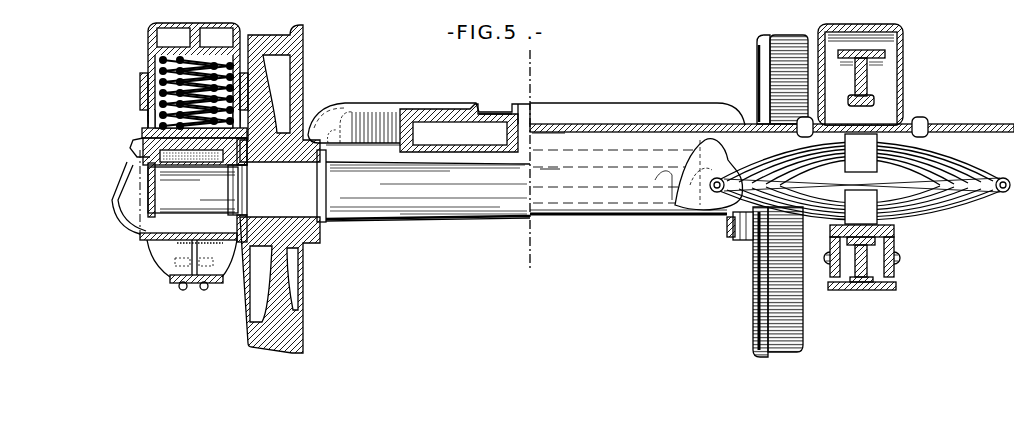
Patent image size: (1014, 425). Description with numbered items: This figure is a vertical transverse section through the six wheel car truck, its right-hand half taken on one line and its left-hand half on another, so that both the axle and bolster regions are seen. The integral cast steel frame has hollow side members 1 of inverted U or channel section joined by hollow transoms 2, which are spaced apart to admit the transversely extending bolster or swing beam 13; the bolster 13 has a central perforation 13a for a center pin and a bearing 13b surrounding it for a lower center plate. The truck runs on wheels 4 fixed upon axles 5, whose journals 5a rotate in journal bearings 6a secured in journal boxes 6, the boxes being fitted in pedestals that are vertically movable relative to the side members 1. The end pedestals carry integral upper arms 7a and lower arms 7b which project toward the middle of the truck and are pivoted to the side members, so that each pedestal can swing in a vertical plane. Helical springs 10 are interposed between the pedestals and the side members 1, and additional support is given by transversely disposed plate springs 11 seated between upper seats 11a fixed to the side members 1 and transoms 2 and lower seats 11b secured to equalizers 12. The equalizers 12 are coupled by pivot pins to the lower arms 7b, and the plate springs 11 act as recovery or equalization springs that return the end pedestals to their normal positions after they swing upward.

The side member 1 is at (210, 23).
The transom 2 is at (596, 140).
The wheel 4 is at (287, 297).
The axle 5 is at (459, 208).
The journal 5a is at (197, 190).
The journal box 6 is at (140, 236).
The journal bearing 6a is at (138, 147).
The upper arm 7a is at (888, 66).
The lower arm 7b is at (845, 280).
The helical spring 10 is at (148, 66).
The plate spring 11 is at (940, 160).
The upper seat 11a is at (900, 118).
The lower seat 11b is at (893, 240).
The equalizer 12 is at (897, 270).
The bolster 13 is at (437, 108).
The central perforation 13a is at (523, 122).
The bearing 13b is at (499, 112).